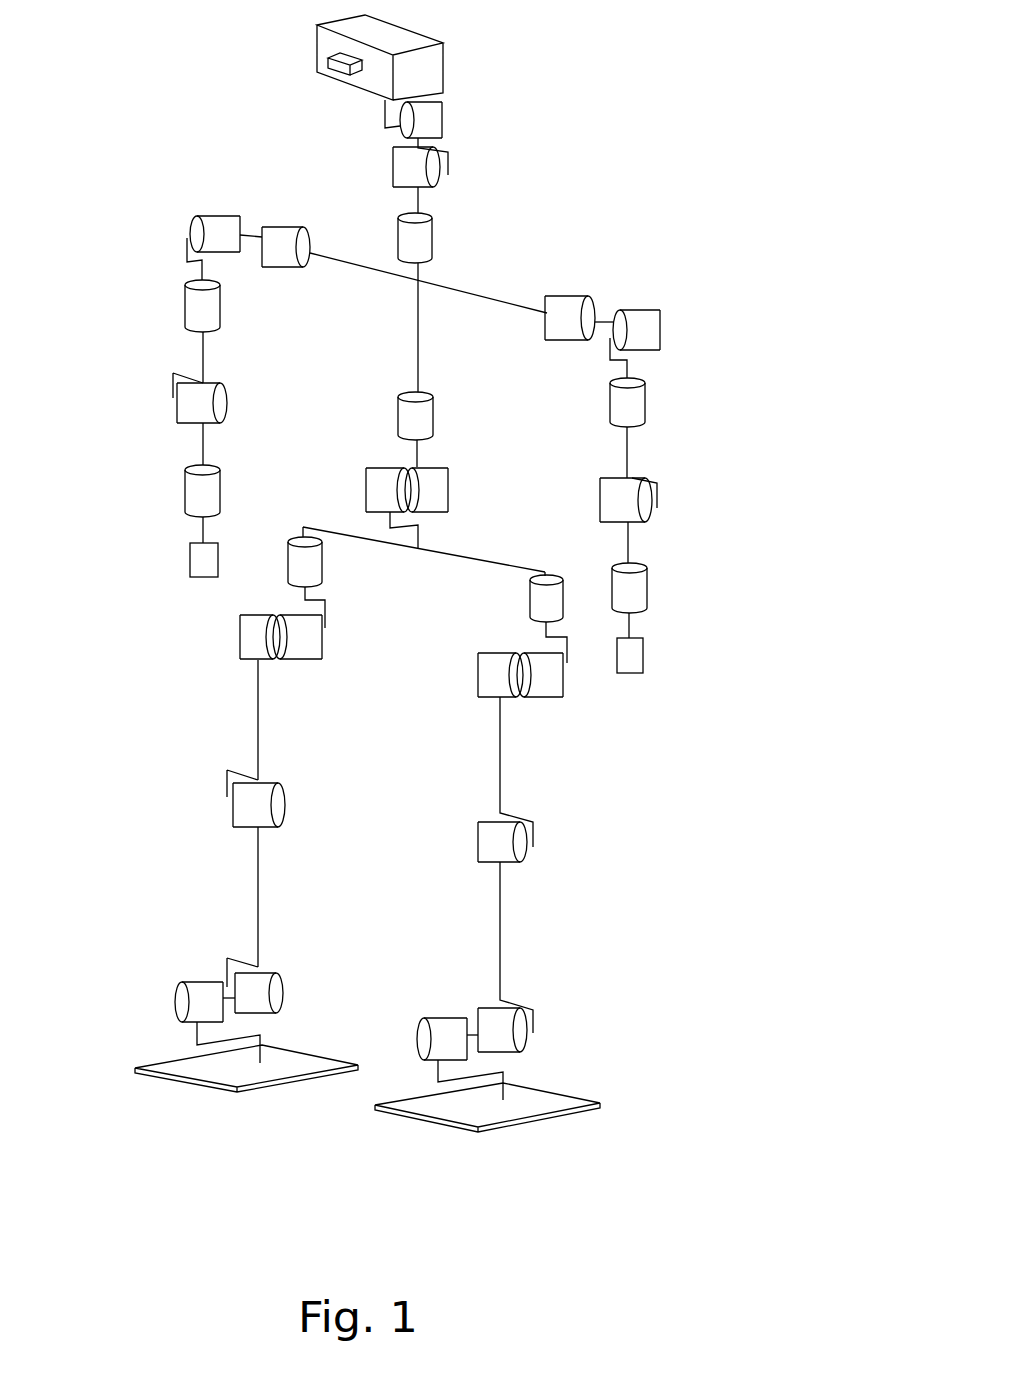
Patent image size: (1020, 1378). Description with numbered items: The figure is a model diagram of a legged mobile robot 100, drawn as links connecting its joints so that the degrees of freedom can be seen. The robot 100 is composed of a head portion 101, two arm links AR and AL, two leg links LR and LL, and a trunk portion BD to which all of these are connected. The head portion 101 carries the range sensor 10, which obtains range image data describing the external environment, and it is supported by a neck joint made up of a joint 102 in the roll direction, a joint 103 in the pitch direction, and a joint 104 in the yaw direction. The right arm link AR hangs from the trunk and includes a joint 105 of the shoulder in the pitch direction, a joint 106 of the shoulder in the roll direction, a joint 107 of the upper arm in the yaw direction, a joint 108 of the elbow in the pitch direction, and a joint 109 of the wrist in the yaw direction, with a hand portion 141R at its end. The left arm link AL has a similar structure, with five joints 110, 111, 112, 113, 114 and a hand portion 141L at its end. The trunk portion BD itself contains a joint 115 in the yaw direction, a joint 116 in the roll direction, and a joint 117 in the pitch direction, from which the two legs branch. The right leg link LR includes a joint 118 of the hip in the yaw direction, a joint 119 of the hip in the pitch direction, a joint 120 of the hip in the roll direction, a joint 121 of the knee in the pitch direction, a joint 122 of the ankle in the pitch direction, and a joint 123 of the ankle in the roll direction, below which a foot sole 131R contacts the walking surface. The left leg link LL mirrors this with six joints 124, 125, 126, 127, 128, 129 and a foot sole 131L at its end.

The robot 100 is at (692, 70).
The range sensor 10 is at (317, 62).
The head portion 101 is at (375, 52).
The joint in the roll direction 102 is at (442, 117).
The joint in the pitch direction 103 is at (393, 165).
The joint in the yaw direction 104 is at (432, 217).
The joint of the shoulder in the pitch direction 105 is at (280, 227).
The joint of the shoulder in the roll direction 106 is at (223, 217).
The joint of the upper arm in the yaw direction 107 is at (185, 298).
The joint of the elbow in the pitch direction 108 is at (227, 403).
The joint of the wrist in the yaw direction 109 is at (185, 490).
The joint 110 is at (580, 297).
The joint 111 is at (647, 310).
The joint 112 is at (647, 397).
The joint 113 is at (602, 490).
The joint 114 is at (645, 587).
The joint in the yaw direction 115 is at (398, 417).
The joint in the roll direction 116 is at (442, 468).
The joint in the pitch direction 117 is at (366, 488).
The joint of the hip in the yaw direction 118 is at (322, 575).
The joint of the hip in the pitch direction 119 is at (240, 640).
The joint of the hip in the roll direction 120 is at (312, 648).
The joint of the knee in the pitch direction 121 is at (285, 815).
The joint of the ankle in the pitch direction 122 is at (283, 1003).
The joint of the ankle in the roll direction 123 is at (195, 982).
The joint 124 is at (530, 607).
The joint 125 is at (483, 657).
The joint 126 is at (560, 690).
The joint 127 is at (525, 852).
The joint 128 is at (527, 1037).
The joint 129 is at (443, 1022).
The foot sole 131R is at (267, 1088).
The foot sole 131L is at (532, 1120).
The hand portion 141R is at (190, 560).
The hand portion 141L is at (643, 657).
The right arm link AR is at (180, 376).
The left arm link AL is at (552, 463).
The trunk portion BD is at (422, 335).
The right leg link LR is at (255, 843).
The left leg link LL is at (526, 879).